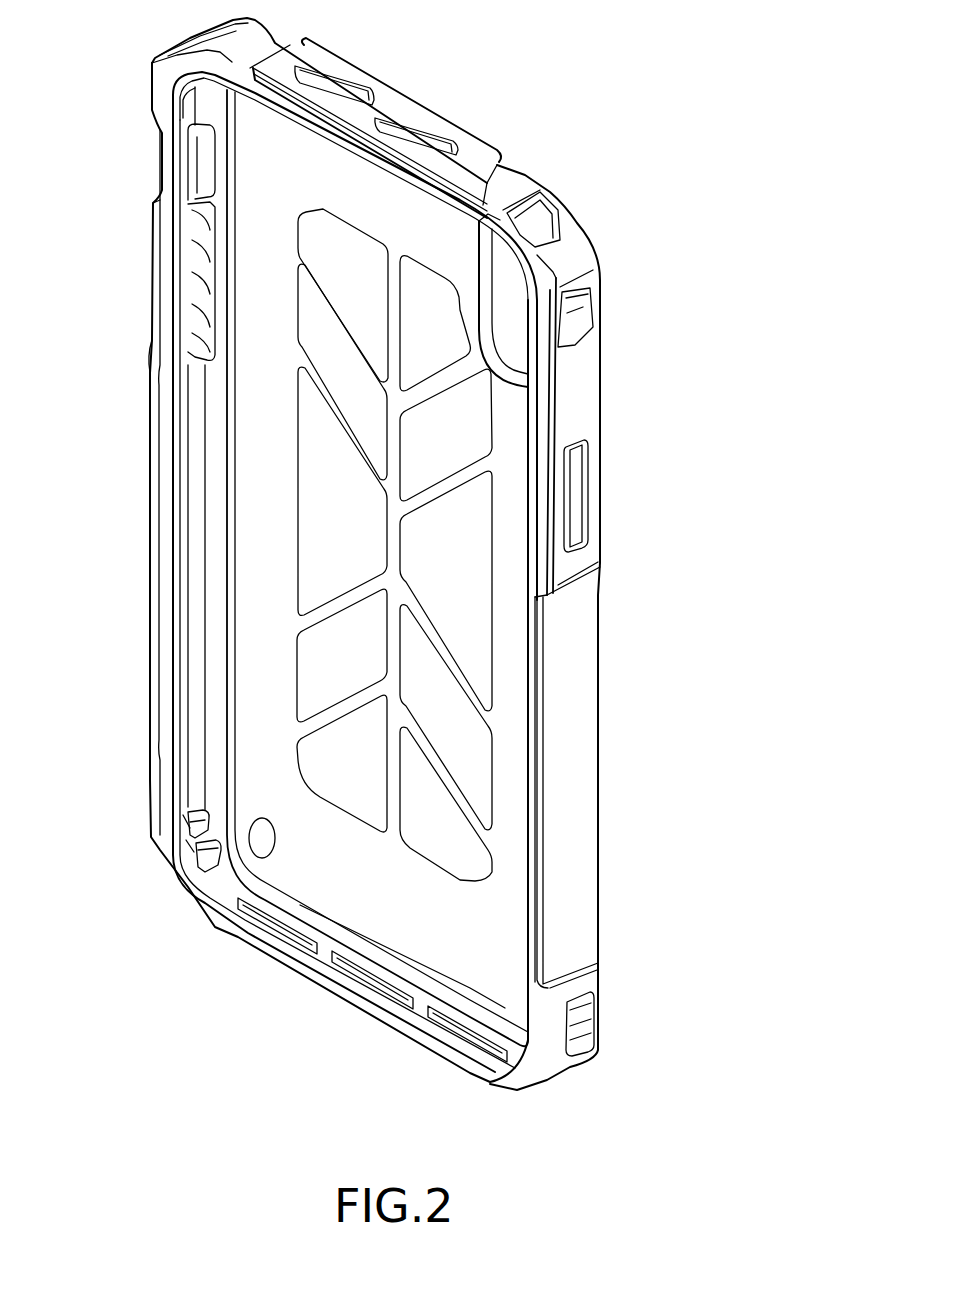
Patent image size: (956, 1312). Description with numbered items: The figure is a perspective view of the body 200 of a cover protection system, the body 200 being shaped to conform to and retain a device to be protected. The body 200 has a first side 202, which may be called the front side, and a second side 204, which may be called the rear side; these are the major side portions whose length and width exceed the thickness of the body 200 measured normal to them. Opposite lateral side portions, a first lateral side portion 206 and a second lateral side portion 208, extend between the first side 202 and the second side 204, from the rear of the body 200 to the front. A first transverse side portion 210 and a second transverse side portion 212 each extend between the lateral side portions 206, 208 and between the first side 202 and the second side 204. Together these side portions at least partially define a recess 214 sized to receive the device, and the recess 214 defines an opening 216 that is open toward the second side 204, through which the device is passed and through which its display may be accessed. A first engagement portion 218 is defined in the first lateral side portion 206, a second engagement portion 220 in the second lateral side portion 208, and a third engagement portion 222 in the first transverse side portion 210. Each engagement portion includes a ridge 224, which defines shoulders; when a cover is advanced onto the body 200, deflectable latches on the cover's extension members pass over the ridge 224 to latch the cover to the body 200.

The body 200 is at (598, 120).
The first side 202 is at (603, 485).
The second side 204 is at (165, 847).
The first lateral side portion 206 is at (587, 372).
The second lateral side portion 208 is at (150, 313).
The first transverse side portion 210 is at (345, 138).
The second transverse side portion 212 is at (358, 1000).
The recess 214 is at (218, 267).
The opening 216 is at (177, 735).
The first engagement portion 218 is at (615, 570).
The second engagement portion 220 is at (134, 373).
The third engagement portion 222 is at (421, 100).
The ridge 224 is at (562, 642).